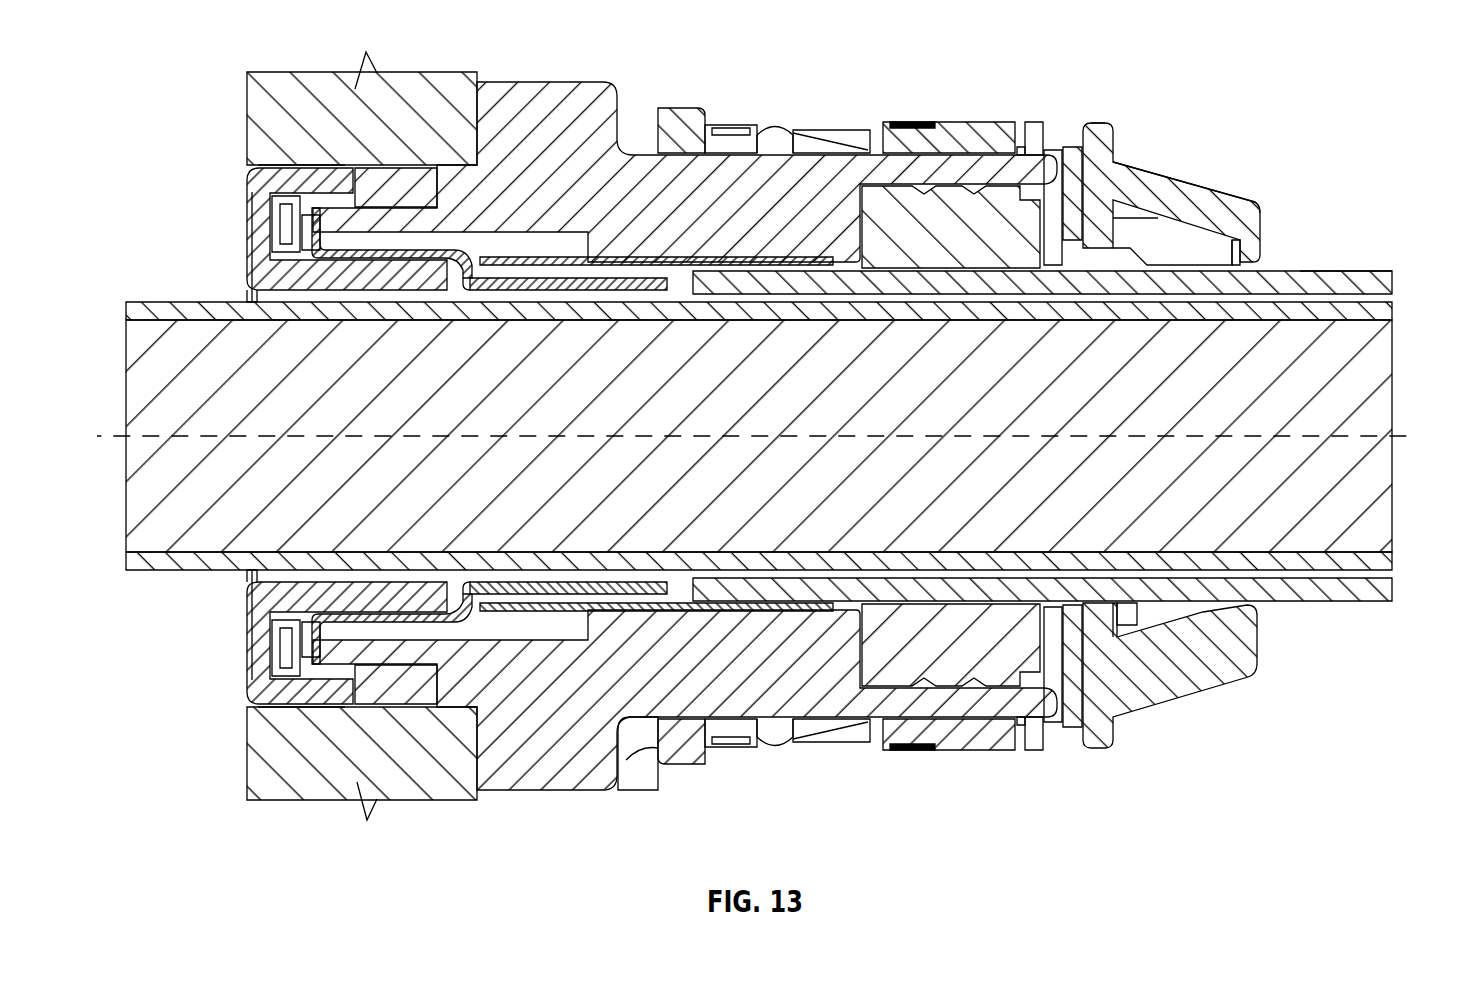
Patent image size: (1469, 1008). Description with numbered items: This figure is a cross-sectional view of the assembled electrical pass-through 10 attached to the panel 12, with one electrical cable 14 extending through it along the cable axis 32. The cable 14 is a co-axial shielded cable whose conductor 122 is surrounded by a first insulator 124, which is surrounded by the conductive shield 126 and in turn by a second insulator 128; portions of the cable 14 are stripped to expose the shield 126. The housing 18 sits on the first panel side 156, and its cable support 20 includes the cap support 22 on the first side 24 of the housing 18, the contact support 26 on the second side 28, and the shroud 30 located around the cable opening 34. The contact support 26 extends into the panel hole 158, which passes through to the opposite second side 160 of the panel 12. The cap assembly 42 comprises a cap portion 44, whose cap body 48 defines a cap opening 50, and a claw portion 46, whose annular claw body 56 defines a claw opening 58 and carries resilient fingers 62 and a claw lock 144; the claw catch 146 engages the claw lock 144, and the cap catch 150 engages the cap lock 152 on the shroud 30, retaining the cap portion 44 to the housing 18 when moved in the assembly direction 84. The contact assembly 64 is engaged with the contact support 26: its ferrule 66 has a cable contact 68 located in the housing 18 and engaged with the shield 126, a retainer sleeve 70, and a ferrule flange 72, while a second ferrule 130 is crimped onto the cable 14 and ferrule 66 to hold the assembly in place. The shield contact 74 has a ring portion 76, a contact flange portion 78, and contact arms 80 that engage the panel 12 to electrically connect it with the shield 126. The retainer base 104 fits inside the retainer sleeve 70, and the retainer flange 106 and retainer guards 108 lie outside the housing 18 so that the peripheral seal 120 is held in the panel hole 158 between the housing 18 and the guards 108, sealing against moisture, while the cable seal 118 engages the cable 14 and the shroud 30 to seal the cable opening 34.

The electrical pass-through 10 is at (1350, 101).
The panel 12 is at (322, 130).
The electrical cable 14 is at (1356, 270).
The housing 18 is at (583, 90).
The cable support 20 is at (804, 110).
The cap support 22 is at (1043, 144).
The first side 24 is at (653, 762).
The contact support 26 is at (386, 114).
The second side 28 is at (430, 735).
The shroud 30 is at (902, 752).
The cable axis 32 is at (1412, 436).
The cable opening 34 is at (850, 242).
The cap assembly 42 is at (1195, 186).
The cap portion 44 is at (1245, 205).
The claw portion 46 is at (1113, 704).
The cap body 48 is at (1256, 676).
The cap opening 50 is at (1253, 610).
The claw body 56 is at (1113, 165).
The claw opening 58 is at (1047, 265).
The resilient fingers 62 is at (1203, 248).
The contact assembly 64 is at (244, 172).
The ferrule 66 is at (513, 276).
The cable contact 68 is at (510, 292).
The retainer sleeve 70 is at (362, 262).
The ferrule flange 72 is at (262, 627).
The shield contact 74 is at (272, 222).
The ring portion 76 is at (272, 614).
The contact flange portion 78 is at (264, 658).
The contact arms 80 is at (298, 164).
The assembly direction 84 is at (1130, 85).
The retainer base 104 is at (325, 290).
The retainer flange 106 is at (250, 262).
The retainer guards 108 is at (300, 725).
The cable seal 118 is at (930, 658).
The peripheral seal 120 is at (372, 699).
The conductor 122 is at (1394, 510).
The first insulator 124 is at (1394, 562).
The shield 126 is at (1396, 293).
The second insulator 128 is at (1394, 590).
The second ferrule 130 is at (612, 590).
The claw lock 144 is at (1058, 722).
The claw catch 146 is at (1033, 752).
The cap catch 150 is at (808, 744).
The cap lock 152 is at (738, 750).
The first panel side 156 is at (478, 762).
The panel hole 158 is at (400, 166).
The second side 160 is at (245, 737).